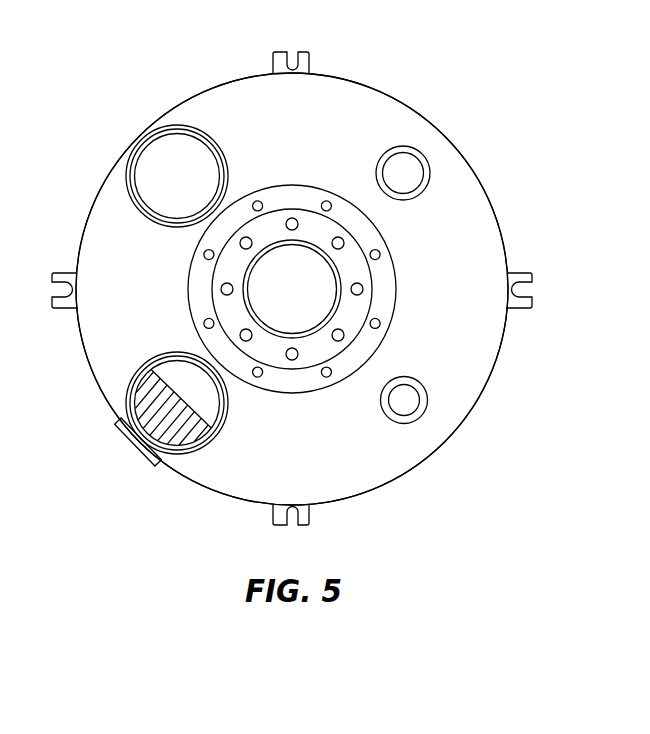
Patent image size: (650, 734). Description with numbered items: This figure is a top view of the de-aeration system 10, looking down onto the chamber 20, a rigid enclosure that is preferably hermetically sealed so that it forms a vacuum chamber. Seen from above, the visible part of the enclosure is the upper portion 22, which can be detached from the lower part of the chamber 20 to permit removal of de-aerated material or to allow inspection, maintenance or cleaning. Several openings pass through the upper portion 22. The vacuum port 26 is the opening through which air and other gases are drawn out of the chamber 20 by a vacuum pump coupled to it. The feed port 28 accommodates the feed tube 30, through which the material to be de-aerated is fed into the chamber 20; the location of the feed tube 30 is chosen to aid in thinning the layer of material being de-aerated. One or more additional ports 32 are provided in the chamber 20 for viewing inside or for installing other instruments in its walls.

The de-aeration system 10 is at (519, 82).
The chamber 20 is at (377, 90).
The upper portion 22 is at (238, 106).
The vacuum port 26 is at (428, 403).
The feed port 28 is at (431, 167).
The feed tube 30 is at (177, 403).
The additional ports 32 is at (153, 174).